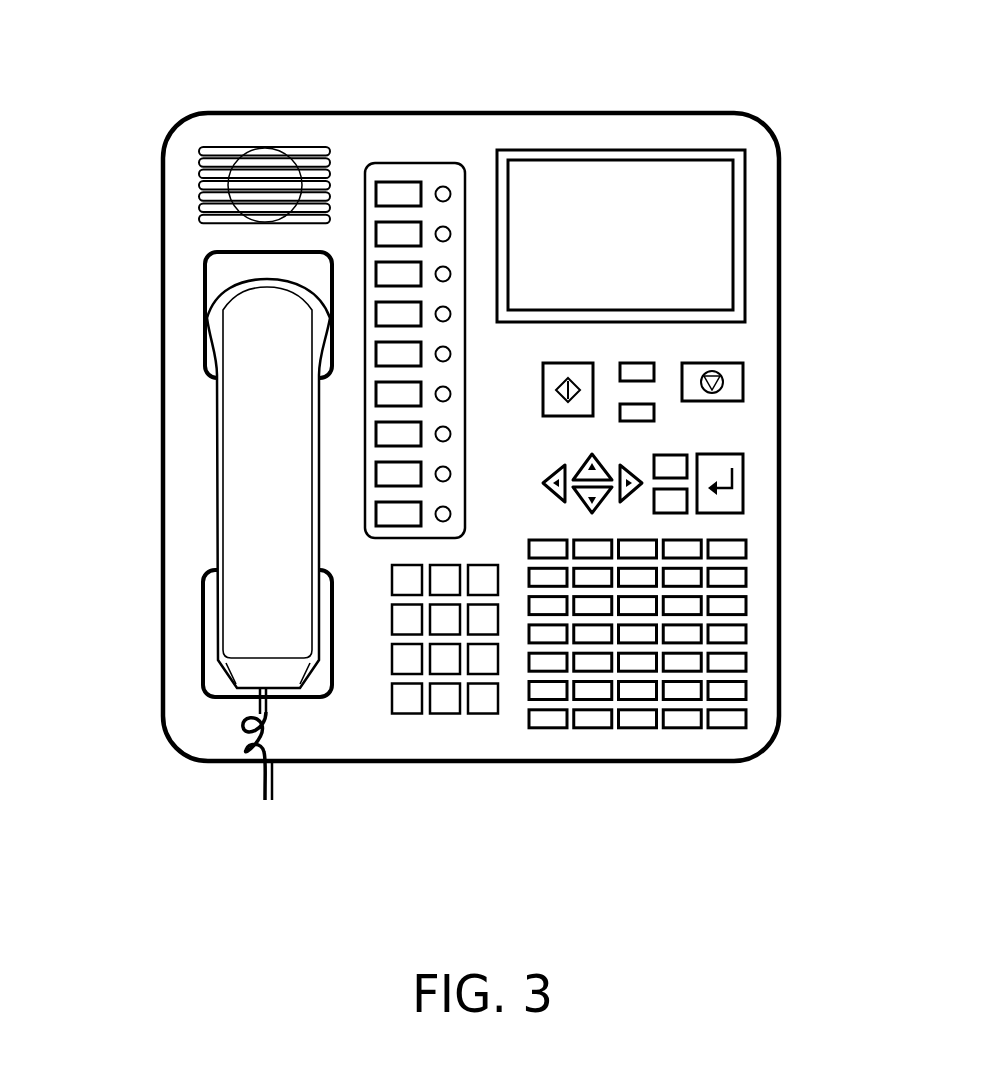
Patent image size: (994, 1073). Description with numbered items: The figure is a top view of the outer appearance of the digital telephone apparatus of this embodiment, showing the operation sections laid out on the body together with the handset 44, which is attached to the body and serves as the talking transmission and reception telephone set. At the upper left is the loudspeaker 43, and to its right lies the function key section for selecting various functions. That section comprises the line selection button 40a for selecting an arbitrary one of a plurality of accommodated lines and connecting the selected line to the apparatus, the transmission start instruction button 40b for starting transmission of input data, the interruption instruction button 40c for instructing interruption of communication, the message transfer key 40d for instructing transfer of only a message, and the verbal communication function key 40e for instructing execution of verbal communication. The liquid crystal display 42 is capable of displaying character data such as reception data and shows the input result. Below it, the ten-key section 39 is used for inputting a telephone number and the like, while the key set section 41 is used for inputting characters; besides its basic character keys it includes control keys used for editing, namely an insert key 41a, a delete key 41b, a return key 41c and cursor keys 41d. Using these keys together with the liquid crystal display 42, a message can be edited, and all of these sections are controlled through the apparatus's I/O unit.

The ten-key section 39 is at (443, 717).
The line selection button 40a is at (405, 182).
The transmission start instruction button 40b is at (593, 416).
The interruption instruction button 40c is at (743, 380).
The message transfer key 40d is at (637, 363).
The verbal communication function key 40e is at (654, 410).
The key set section 41 is at (746, 633).
The insert key 41a is at (670, 455).
The delete key 41b is at (690, 517).
The return key 41c is at (743, 493).
The cursor keys 41d is at (585, 513).
The liquid crystal display 42 is at (715, 235).
The loudspeaker 43 is at (265, 163).
The handset 44 is at (257, 497).